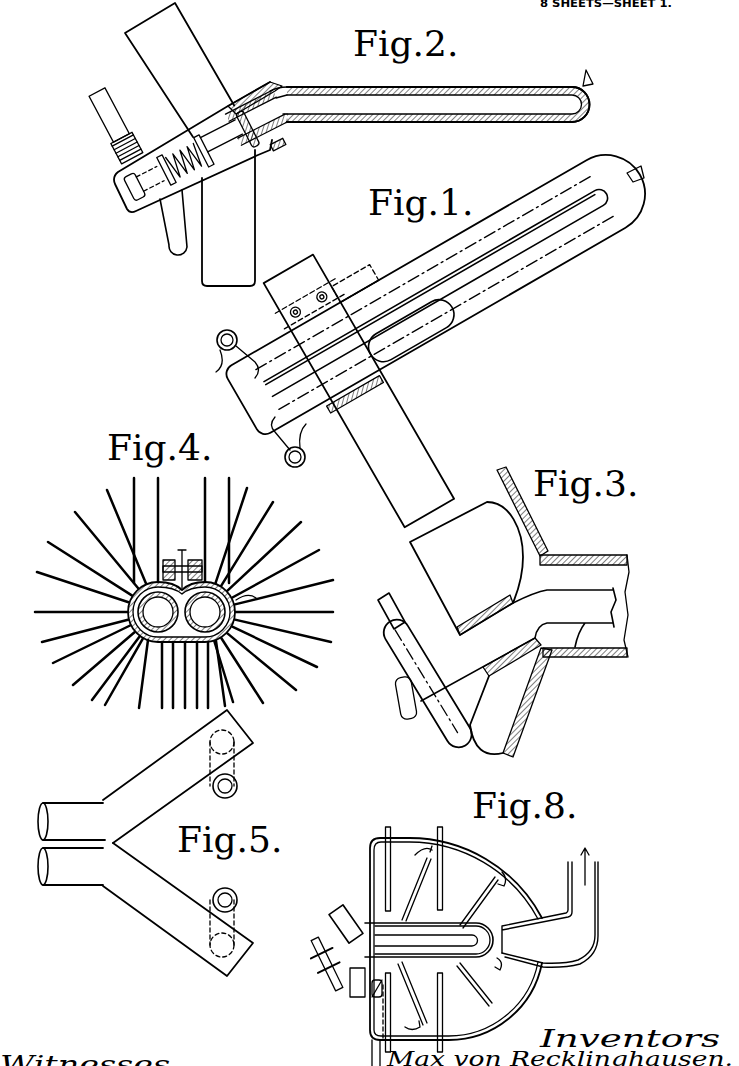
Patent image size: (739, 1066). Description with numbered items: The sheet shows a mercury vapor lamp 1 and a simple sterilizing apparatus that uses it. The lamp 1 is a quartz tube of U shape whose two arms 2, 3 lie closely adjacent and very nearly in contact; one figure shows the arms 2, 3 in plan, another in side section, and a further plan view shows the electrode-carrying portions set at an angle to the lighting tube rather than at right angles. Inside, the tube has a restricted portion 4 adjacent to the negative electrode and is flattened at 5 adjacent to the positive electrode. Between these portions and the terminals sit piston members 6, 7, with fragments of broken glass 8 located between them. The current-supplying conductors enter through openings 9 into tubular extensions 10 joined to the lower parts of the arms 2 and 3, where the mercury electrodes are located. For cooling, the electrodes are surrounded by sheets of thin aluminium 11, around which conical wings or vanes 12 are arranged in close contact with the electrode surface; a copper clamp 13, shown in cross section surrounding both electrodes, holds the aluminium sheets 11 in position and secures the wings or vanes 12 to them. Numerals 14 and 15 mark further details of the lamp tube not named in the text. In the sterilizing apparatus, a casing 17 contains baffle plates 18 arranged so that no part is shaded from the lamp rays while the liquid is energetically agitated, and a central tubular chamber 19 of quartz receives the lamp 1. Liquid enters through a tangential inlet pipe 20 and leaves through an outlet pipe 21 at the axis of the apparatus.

In FIG. 2, the mercury vapor lamp 1 is at (370, 88).
In FIG. 8, the mercury vapor lamp 1 is at (368, 937).
In FIG. 2, the arm of the U-shaped quartz tube 2 is at (503, 98).
In FIG. 1, the arm of the U-shaped quartz tube 2 is at (547, 210).
In FIG. 4, the arm of the U-shaped quartz tube 2 is at (292, 667).
In FIG. 5, the arm of the U-shaped quartz tube 2 is at (145, 776).
In FIG. 8, the arm of the U-shaped quartz tube 2 is at (429, 940).
In FIG. 1, the arm of the U-shaped quartz tube 3 is at (587, 237).
In FIG. 4, the arm of the U-shaped quartz tube 3 is at (107, 680).
In FIG. 3, the arm of the U-shaped quartz tube 3 is at (580, 597).
In FIG. 5, the arm of the U-shaped quartz tube 3 is at (145, 909).
In FIG. 2, the restricted portion 4 is at (262, 118).
In FIG. 1, the restricted portion 4 is at (370, 300).
In FIG. 1, the flattened portion 5 is at (425, 338).
In FIG. 3, the flattened portion 5 is at (568, 656).
In FIG. 2, the piston member 6 is at (249, 160).
In FIG. 2, the piston member 7 is at (148, 190).
In FIG. 2, the fragments of broken glass 8 is at (183, 153).
In FIG. 2, the opening 9 is at (100, 103).
In FIG. 1, the opening 9 is at (217, 340).
In FIG. 3, the opening 9 is at (403, 600).
In FIG. 5, the opening 9 is at (236, 790).
In FIG. 2, the tubular extension 10 is at (175, 243).
In FIG. 1, the tubular extension 10 is at (253, 353).
In FIG. 3, the tubular extension 10 is at (447, 727).
In FIG. 5, the tubular extension 10 is at (234, 768).
In FIG. 2, the sheet of thin aluminium 11 is at (278, 156).
In FIG. 4, the sheet of thin aluminium 11 is at (182, 566).
In FIG. 3, the sheet of thin aluminium 11 is at (527, 667).
In FIG. 2, the wings or vanes 12 is at (195, 55).
In FIG. 1, the wings or vanes 12 is at (413, 467).
In FIG. 4, the wings or vanes 12 is at (295, 641).
In FIG. 3, the wings or vanes 12 is at (435, 557).
In FIG. 1, the copper clamp 13 is at (327, 303).
In FIG. 4, the copper clamp 13 is at (290, 636).
In FIG. 3, the copper clamp 13 is at (531, 676).
In FIG. 1, the annular space 14 is at (532, 266).
In FIG. 1, the nozzle 15 is at (607, 193).
In FIG. 8, the casing 17 is at (530, 887).
In FIG. 8, the baffle plates 18 is at (440, 890).
In FIG. 8, the tubular chamber 19 is at (373, 993).
In FIG. 8, the inlet pipe 20 is at (375, 1057).
In FIG. 8, the outlet pipe 21 is at (572, 950).